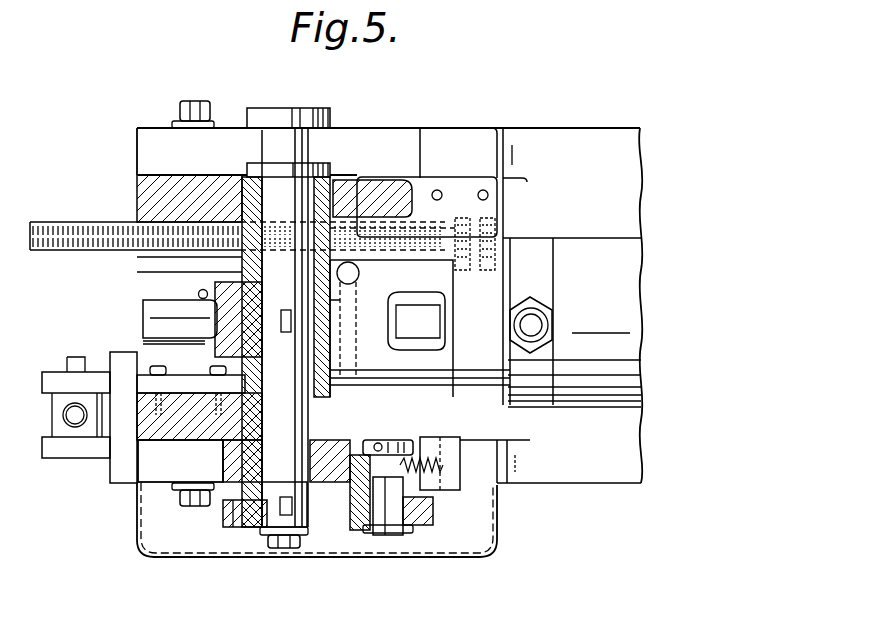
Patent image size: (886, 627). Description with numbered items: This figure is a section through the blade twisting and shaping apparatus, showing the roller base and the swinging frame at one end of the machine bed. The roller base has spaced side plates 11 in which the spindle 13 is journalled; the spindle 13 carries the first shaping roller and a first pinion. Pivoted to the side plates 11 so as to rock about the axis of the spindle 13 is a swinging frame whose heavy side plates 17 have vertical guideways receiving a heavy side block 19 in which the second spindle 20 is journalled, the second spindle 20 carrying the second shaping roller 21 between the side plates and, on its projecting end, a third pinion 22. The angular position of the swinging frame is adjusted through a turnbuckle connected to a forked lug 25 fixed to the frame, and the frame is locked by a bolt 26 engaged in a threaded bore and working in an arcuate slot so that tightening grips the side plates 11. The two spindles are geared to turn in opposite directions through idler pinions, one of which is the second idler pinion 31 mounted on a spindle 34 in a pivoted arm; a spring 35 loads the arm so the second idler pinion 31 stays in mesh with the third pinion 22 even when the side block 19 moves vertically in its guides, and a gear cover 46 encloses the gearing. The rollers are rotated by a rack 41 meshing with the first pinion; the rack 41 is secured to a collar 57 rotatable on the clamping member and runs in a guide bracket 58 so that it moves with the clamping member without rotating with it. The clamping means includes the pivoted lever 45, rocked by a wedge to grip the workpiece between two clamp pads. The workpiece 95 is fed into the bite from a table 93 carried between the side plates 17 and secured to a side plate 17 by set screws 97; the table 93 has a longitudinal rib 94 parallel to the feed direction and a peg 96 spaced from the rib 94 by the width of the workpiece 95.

The side plates 11 is at (158, 128).
The spindle 13 is at (290, 108).
The side plates 17 is at (137, 176).
The side block 19 is at (322, 200).
The second spindle 20 is at (300, 178).
The second shaping roller 21 is at (203, 292).
The third pinion 22 is at (240, 527).
The forked lug 25 is at (90, 458).
The bolt 26 is at (198, 101).
The second idler pinion 31 is at (355, 530).
The spindle 34 is at (383, 535).
The spring 35 is at (440, 490).
The rack 41 is at (100, 222).
The pivoted lever 45 is at (375, 318).
The gear cover 46 is at (272, 548).
The collar 57 is at (487, 290).
The guide bracket 58 is at (455, 185).
The table 93 is at (152, 292).
The longitudinal rib 94 is at (147, 342).
The workpiece 95 is at (157, 320).
The peg 96 is at (207, 293).
The set screws 97 is at (212, 368).